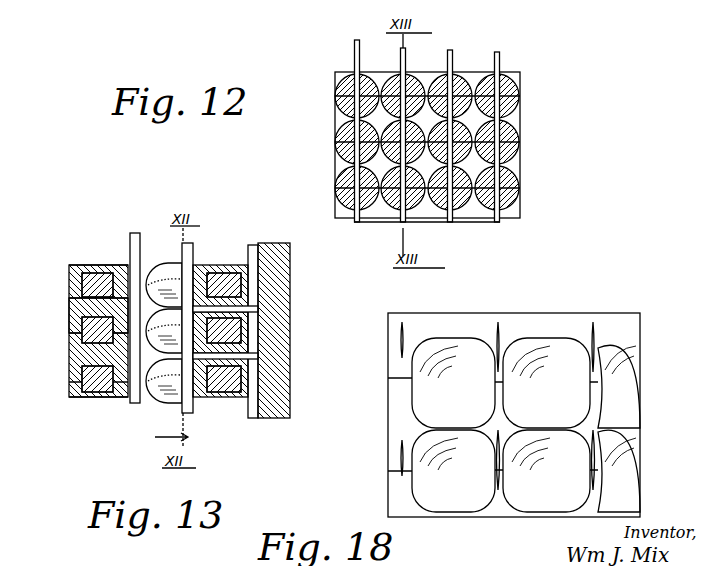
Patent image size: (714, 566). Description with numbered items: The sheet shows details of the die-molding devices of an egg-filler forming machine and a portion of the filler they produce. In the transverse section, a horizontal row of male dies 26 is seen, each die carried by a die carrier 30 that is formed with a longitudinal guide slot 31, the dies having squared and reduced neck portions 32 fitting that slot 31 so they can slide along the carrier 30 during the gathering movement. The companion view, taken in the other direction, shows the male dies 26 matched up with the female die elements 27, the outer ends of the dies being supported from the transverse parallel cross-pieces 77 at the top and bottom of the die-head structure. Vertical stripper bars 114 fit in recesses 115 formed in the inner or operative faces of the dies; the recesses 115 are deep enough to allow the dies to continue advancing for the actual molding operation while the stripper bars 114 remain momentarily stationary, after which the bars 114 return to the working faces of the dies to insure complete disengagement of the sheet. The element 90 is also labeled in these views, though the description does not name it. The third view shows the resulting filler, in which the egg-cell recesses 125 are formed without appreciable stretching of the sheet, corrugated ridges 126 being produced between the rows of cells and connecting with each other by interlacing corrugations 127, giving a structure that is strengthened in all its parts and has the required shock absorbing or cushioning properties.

In FIG. 12, the male dies 26 is at (340, 180).
In FIG. 13, the male dies 26 is at (201, 406).
In FIG. 13, the female die elements 27 is at (118, 400).
In FIG. 13, the die carrier 30 is at (87, 265).
In FIG. 13, the longitudinal guide slot 31 is at (70, 344).
In FIG. 13, the neck portions 32 is at (70, 307).
In FIG. 12, the cross-pieces 77 is at (463, 223).
In FIG. 13, the cross-pieces 77 is at (280, 390).
In FIG. 13, the cushion element 90 is at (150, 406).
In FIG. 18, the cushion element 90 is at (637, 316).
In FIG. 12, the stripper bars 114 is at (497, 52).
In FIG. 13, the stripper bars 114 is at (182, 260).
In FIG. 12, the recesses 115 is at (519, 103).
In FIG. 13, the recesses 115 is at (124, 262).
In FIG. 18, the egg-cell recesses 125 is at (526, 425).
In FIG. 18, the corrugated ridges 126 is at (598, 428).
In FIG. 18, the interlacing corrugations 127 is at (503, 378).